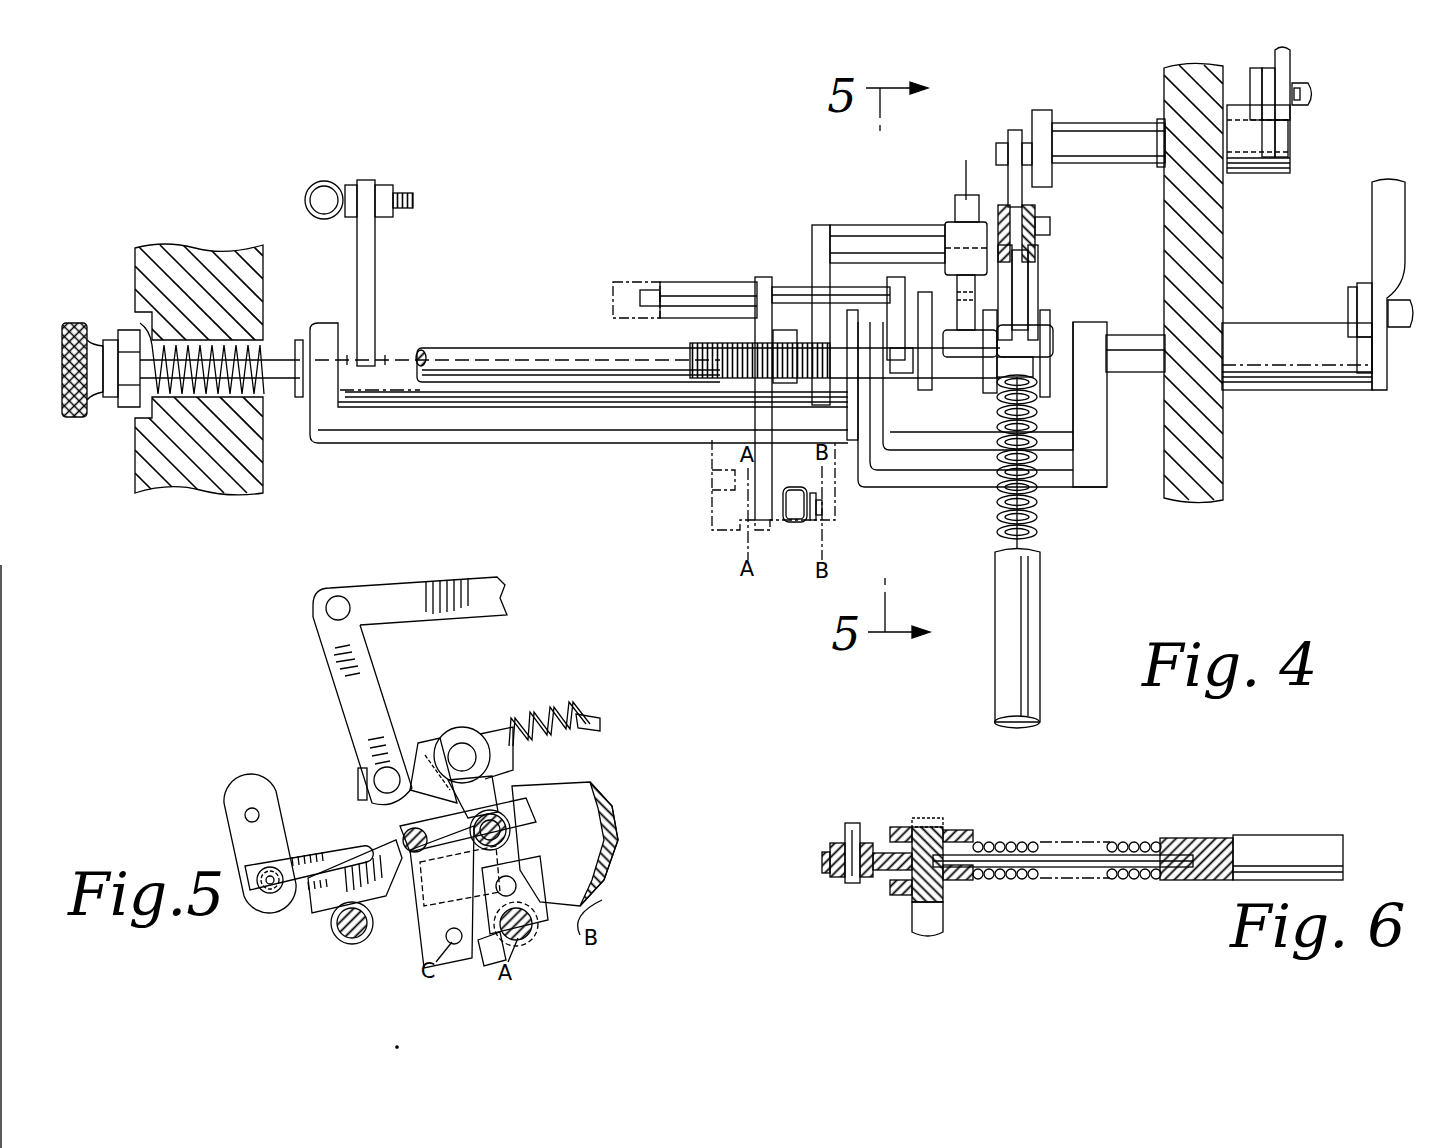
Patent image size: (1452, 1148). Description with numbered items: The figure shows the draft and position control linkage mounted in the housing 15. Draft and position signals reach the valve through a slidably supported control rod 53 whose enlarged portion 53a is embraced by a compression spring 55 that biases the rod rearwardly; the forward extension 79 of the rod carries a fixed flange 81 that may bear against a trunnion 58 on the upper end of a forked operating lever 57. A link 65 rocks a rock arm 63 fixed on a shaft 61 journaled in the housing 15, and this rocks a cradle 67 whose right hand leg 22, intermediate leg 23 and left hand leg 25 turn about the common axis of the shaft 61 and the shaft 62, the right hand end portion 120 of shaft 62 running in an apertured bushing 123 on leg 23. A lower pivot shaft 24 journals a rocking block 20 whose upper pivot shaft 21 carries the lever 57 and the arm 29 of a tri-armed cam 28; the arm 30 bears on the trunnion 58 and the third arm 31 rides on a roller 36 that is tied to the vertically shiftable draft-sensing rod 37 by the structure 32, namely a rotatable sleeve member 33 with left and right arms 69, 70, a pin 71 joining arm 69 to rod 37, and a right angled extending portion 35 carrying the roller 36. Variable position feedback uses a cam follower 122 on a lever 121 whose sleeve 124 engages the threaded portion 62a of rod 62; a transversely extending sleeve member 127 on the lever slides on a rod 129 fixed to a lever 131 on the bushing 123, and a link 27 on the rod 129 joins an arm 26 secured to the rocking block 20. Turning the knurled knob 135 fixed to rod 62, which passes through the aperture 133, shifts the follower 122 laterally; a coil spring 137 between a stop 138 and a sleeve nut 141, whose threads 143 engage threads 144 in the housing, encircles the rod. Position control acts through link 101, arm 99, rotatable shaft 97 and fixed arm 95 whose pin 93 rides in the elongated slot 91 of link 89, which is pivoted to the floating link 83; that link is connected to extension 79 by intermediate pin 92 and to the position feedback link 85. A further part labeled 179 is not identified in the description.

In FIG. 4, the housing 15 is at (205, 252).
In FIG. 5, the rocking block 20 is at (514, 874).
In FIG. 5, the upper pivot shaft 21 is at (518, 886).
In FIG. 4, the right hand leg 22 is at (1086, 412).
In FIG. 4, the intermediate leg 23 is at (840, 396).
In FIG. 5, the lower pivot shaft 24 is at (530, 938).
In FIG. 4, the left hand leg 25 is at (322, 392).
In FIG. 4, the arm 26 is at (925, 312).
In FIG. 5, the arm 26 is at (478, 945).
In FIG. 4, the link 27 is at (902, 288).
In FIG. 5, the link 27 is at (440, 922).
In FIG. 4, the tri-armed cam 28 is at (956, 173).
In FIG. 5, the tri-armed cam 28 is at (398, 811).
In FIG. 5, the arm 29 is at (520, 854).
In FIG. 4, the arm 30 is at (968, 325).
In FIG. 5, the arm 30 is at (432, 745).
In FIG. 4, the third arm 31 is at (976, 212).
In FIG. 5, the third arm 31 is at (322, 908).
In FIG. 4, the interconnecting structure 32 is at (422, 352).
In FIG. 4, the rotatable sleeve member 33 is at (393, 348).
In FIG. 4, the right angled extending portion 35 is at (854, 228).
In FIG. 4, the roller 36 is at (962, 250).
In FIG. 5, the roller 36 is at (340, 938).
In FIG. 4, the vertically shiftable rod 37 is at (318, 200).
In FIG. 4, the control rod 53 is at (1028, 522).
In FIG. 5, the control rod 53 is at (600, 718).
In FIG. 6, the control rod 53 is at (1088, 870).
In FIG. 4, the enlarged portion 53a is at (1022, 630).
In FIG. 6, the enlarged portion 53a is at (1264, 858).
In FIG. 4, the spring 55 is at (1032, 490).
In FIG. 5, the spring 55 is at (546, 728).
In FIG. 6, the spring 55 is at (1012, 844).
In FIG. 4, the forked operating lever 57 is at (1030, 340).
In FIG. 5, the forked operating lever 57 is at (475, 732).
In FIG. 4, the trunnion 58 is at (1034, 352).
In FIG. 5, the trunnion 58 is at (462, 742).
In FIG. 6, the trunnion 58 is at (940, 920).
In FIG. 4, the shaft 61 is at (1140, 340).
In FIG. 4, the shaft 62 is at (302, 352).
In FIG. 4, the threaded portion 62a is at (760, 348).
In FIG. 4, the rock arm 63 is at (1366, 355).
In FIG. 4, the link 65 is at (1385, 226).
In FIG. 4, the cradle 67 is at (945, 490).
In FIG. 5, the cradle 67 is at (618, 842).
In FIG. 4, the left hand arm 69 is at (375, 252).
In FIG. 4, the right hand arm 70 is at (818, 235).
In FIG. 4, the pin 71 is at (400, 190).
In FIG. 4, the forward extension 79 is at (1024, 272).
In FIG. 5, the forward extension 79 is at (356, 790).
In FIG. 6, the forward extension 79 is at (890, 852).
In FIG. 4, the fixed flange 81 is at (1036, 300).
In FIG. 6, the fixed flange 81 is at (908, 896).
In FIG. 4, the floating lever 83 is at (1036, 226).
In FIG. 5, the floating lever 83 is at (345, 676).
In FIG. 6, the floating lever 83 is at (828, 872).
In FIG. 5, the position feedback link 85 is at (440, 600).
In FIG. 4, the link 89 is at (1015, 130).
In FIG. 5, the link 89 is at (304, 854).
In FIG. 5, the elongated slot 91 is at (274, 870).
In FIG. 6, the intermediate pin 92 is at (852, 886).
In FIG. 4, the pin 93 is at (1003, 148).
In FIG. 5, the pin 93 is at (268, 888).
In FIG. 4, the fixed arm 95 is at (1052, 176).
In FIG. 5, the fixed arm 95 is at (232, 824).
In FIG. 4, the rotatable shaft 97 is at (1062, 122).
In FIG. 4, the arm 99 is at (1268, 140).
In FIG. 4, the link 101 is at (1280, 108).
In FIG. 5, the right hand end portion 120 is at (502, 822).
In FIG. 4, the lever 121 is at (766, 522).
In FIG. 4, the cam follower 122 is at (791, 514).
In FIG. 5, the cam follower 122 is at (505, 822).
In FIG. 4, the apertured bushing 123 is at (898, 376).
In FIG. 4, the sleeve 124 is at (783, 340).
In FIG. 4, the transversely extending sleeve member 127 is at (732, 286).
In FIG. 4, the rod 129 is at (646, 290).
In FIG. 5, the rod 129 is at (412, 853).
In FIG. 4, the lever 131 is at (895, 295).
In FIG. 5, the lever 131 is at (460, 870).
In FIG. 4, the aperture 133 is at (240, 345).
In FIG. 4, the knurled knob 135 is at (72, 320).
In FIG. 4, the coil spring 137 is at (255, 355).
In FIG. 4, the stop 138 is at (300, 392).
In FIG. 4, the sleeve nut 141 is at (125, 396).
In FIG. 4, the threads 143 is at (148, 400).
In FIG. 4, the threads 144 is at (160, 332).
In FIG. 4, the wall edge 179 is at (262, 482).